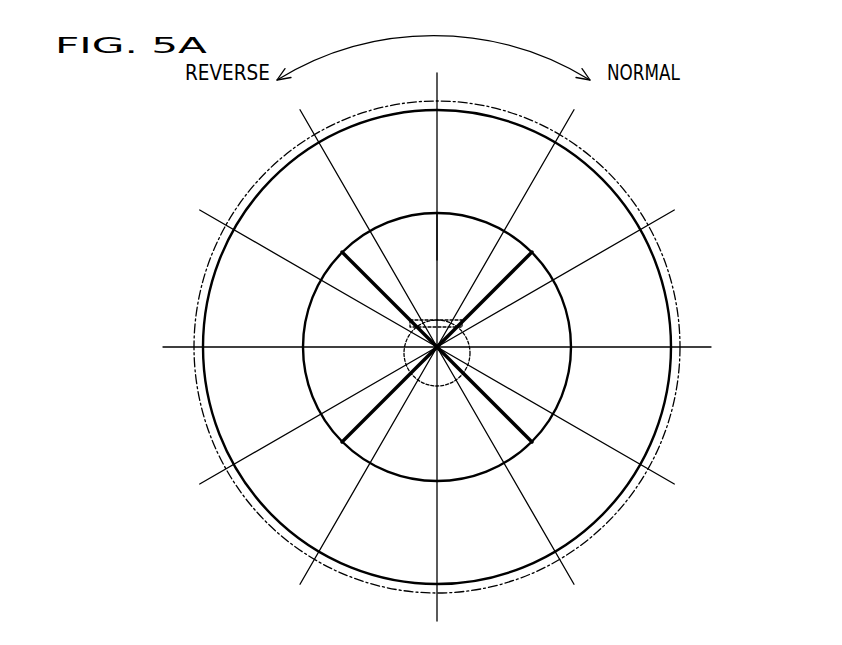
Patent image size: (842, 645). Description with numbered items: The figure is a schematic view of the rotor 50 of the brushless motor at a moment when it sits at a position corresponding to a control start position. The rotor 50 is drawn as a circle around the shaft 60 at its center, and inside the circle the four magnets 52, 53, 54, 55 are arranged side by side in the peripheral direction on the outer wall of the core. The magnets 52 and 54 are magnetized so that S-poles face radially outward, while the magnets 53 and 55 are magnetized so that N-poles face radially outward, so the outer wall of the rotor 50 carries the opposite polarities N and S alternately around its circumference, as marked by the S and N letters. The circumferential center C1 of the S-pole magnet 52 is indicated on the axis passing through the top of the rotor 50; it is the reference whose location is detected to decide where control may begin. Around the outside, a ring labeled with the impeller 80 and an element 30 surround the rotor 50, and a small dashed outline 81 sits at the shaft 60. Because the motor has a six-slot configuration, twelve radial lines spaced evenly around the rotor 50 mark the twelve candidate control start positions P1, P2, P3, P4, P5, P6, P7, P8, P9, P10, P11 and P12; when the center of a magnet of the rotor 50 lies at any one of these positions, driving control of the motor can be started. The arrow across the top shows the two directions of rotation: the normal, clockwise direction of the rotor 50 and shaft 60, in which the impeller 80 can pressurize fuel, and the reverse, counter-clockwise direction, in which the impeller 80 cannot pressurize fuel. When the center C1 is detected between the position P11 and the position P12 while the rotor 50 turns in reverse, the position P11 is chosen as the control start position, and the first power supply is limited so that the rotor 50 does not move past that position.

The rotor 30 is at (661, 393).
The rotor 50 is at (568, 385).
The magnet 52 is at (418, 222).
The magnet 53 is at (310, 372).
The magnet 54 is at (453, 473).
The magnet 55 is at (573, 322).
The shaft 60 is at (470, 338).
The impeller 80 is at (680, 295).
The detection portion 81 is at (463, 361).
The circumferential center C1 is at (440, 241).
The position P1 is at (436, 200).
The position P2 is at (516, 217).
The position P3 is at (565, 270).
The position P4 is at (588, 351).
The position P5 is at (566, 428).
The position P6 is at (516, 479).
The position P7 is at (438, 496).
The position P8 is at (357, 479).
The position P9 is at (306, 428).
The position P10 is at (282, 351).
The position P11 is at (301, 269).
The position P12 is at (356, 217).